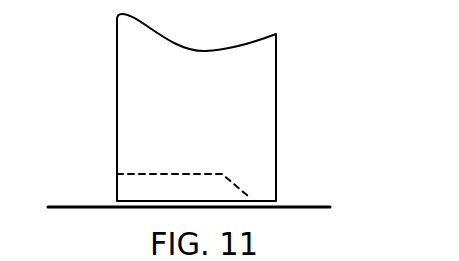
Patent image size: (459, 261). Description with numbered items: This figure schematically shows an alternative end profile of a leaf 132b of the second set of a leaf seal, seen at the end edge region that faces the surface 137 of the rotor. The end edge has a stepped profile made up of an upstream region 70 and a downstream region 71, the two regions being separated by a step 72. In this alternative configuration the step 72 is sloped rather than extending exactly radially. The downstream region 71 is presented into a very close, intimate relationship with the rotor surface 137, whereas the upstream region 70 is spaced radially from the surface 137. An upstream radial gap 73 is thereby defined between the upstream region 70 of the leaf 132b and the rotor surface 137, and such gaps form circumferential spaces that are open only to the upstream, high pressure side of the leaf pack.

The leaf of the second set 132b is at (260, 77).
The upstream region 70 is at (143, 173).
The downstream region 71 is at (258, 200).
The step 72 is at (232, 182).
The upstream radial gap 73 is at (128, 190).
The surface of the rotor 137 is at (313, 202).